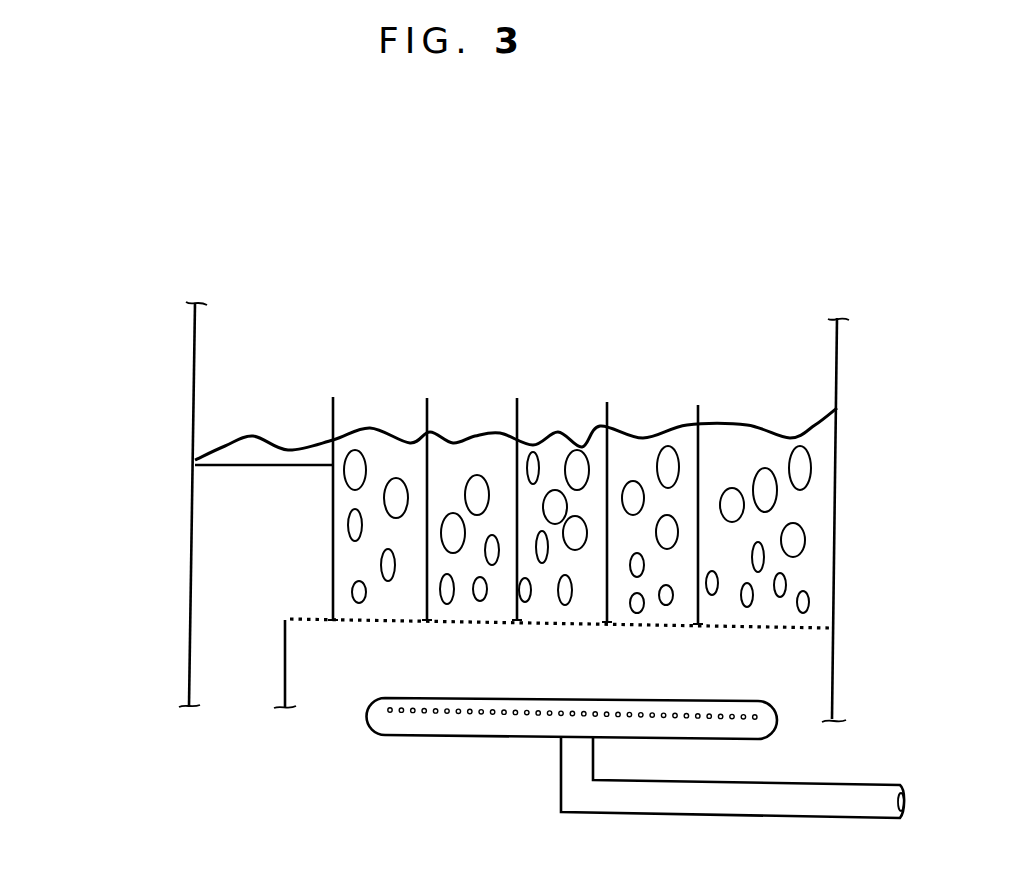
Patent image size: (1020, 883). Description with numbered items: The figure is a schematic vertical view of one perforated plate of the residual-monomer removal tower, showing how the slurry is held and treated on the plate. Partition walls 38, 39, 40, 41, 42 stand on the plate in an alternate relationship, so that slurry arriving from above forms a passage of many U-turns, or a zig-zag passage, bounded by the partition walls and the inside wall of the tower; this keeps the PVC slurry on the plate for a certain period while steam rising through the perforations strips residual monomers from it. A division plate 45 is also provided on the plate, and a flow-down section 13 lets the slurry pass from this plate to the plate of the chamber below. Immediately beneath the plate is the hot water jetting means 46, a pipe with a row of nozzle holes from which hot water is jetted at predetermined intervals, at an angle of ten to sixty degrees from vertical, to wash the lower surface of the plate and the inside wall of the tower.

The flow-down section 13 is at (248, 659).
The partition wall 38 is at (698, 405).
The partition wall 39 is at (517, 398).
The partition wall 40 is at (607, 402).
The partition wall 41 is at (427, 398).
The partition wall 42 is at (333, 397).
The division plate 45 is at (258, 466).
The hot water jetting means 46 is at (430, 735).